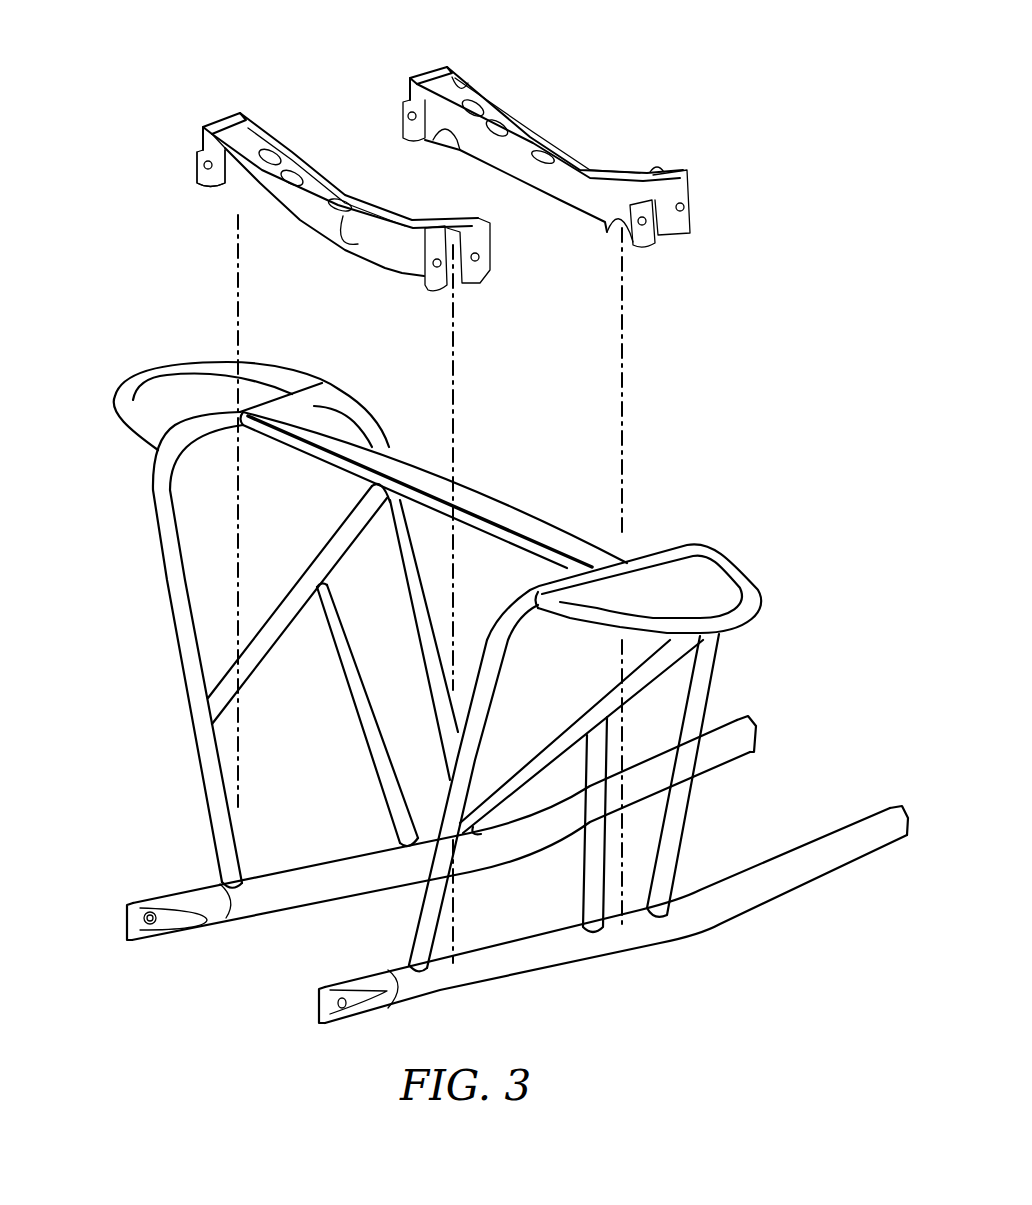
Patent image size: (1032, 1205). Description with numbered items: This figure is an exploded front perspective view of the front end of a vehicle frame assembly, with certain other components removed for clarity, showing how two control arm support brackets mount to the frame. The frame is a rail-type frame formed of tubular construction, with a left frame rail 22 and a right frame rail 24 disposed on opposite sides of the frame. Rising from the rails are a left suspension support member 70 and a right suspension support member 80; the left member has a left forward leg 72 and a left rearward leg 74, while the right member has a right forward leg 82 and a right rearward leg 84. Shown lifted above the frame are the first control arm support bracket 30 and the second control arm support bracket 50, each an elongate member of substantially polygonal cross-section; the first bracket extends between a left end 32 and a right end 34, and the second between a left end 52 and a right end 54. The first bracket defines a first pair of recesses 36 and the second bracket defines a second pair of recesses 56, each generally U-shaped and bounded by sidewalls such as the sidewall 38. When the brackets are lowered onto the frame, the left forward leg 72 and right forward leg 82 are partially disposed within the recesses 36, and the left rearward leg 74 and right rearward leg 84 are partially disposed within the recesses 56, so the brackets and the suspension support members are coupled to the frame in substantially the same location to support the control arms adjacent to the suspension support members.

The left frame rail 22 is at (835, 870).
The right frame rail 24 is at (745, 760).
The first control arm support bracket 30 is at (322, 265).
The left end 32 is at (432, 298).
The right end 34 is at (250, 112).
The first pair of recesses 36 is at (234, 192).
The sidewall 38 is at (352, 240).
The second control arm support bracket 50 is at (570, 112).
The left end 52 is at (690, 168).
The right end 54 is at (455, 68).
The second pair of recesses 56 is at (462, 88).
The left suspension support member 70 is at (790, 600).
The left forward leg 72 is at (405, 945).
The left rearward leg 74 is at (685, 830).
The right suspension support member 80 is at (135, 460).
The right forward leg 82 is at (205, 815).
The right rearward leg 84 is at (418, 665).